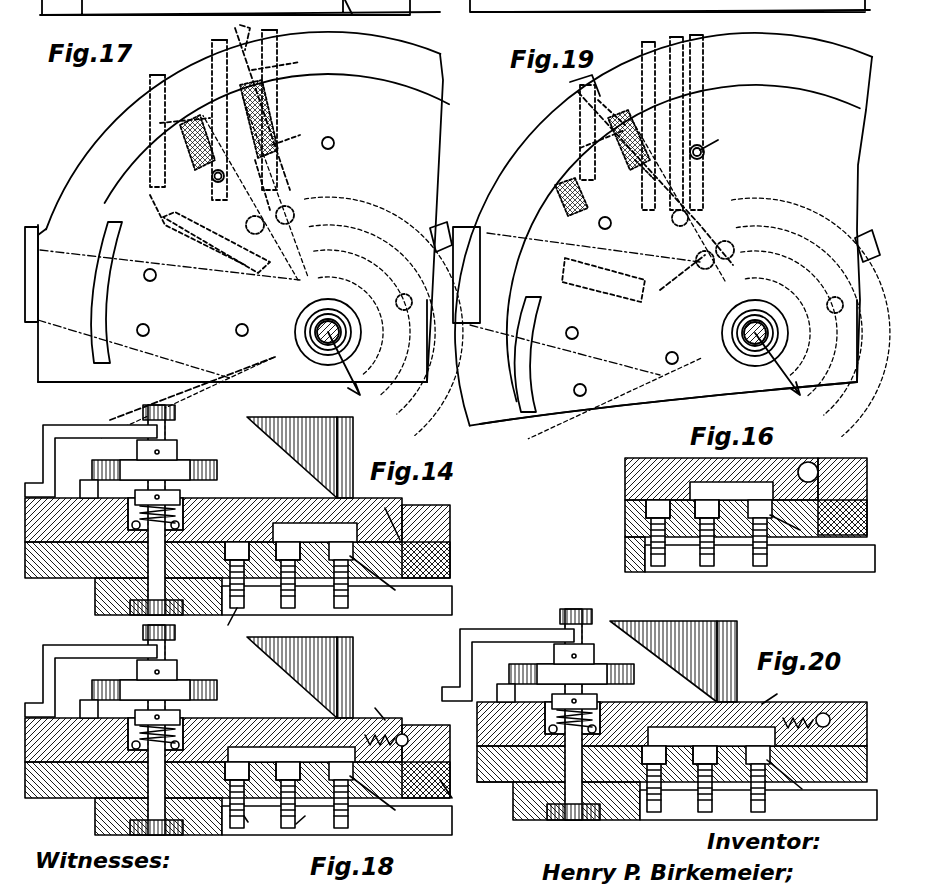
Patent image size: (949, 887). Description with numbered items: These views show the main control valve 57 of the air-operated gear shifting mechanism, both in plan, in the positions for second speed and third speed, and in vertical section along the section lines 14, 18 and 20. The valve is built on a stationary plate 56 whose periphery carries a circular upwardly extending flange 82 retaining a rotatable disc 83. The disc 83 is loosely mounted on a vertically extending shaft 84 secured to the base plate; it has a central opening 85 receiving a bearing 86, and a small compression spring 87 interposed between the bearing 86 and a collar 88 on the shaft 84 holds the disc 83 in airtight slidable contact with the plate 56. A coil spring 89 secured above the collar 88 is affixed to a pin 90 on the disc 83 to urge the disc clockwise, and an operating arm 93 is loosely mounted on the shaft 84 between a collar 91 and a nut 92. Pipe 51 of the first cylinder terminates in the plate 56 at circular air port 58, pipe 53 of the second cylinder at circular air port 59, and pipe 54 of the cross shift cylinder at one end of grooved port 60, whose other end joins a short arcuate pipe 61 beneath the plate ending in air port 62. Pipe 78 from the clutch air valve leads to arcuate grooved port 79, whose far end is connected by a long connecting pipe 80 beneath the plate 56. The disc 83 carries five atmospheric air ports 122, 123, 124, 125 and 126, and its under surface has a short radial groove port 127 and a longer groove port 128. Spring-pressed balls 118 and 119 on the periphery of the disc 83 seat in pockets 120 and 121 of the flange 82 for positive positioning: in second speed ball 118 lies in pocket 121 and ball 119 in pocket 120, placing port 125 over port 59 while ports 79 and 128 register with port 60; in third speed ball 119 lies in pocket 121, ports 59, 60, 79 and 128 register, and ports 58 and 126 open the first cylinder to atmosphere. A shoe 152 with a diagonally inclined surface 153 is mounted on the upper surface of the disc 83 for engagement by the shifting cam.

In FIG. 17, the section line 14— 14 is at (350, 15).
In FIG. 17, the section line 18— 18 is at (295, 204).
In FIG. 19, the section line 20— 20 is at (582, 76).
In FIG. 17, the pipe 51 is at (278, 32).
In FIG. 19, the pipe 51 is at (710, 62).
In FIG. 14, the pipe 51 is at (349, 598).
In FIG. 18, the pipe 51 is at (355, 795).
In FIG. 17, the pipe 53 is at (220, 40).
In FIG. 19, the pipe 53 is at (649, 42).
In FIG. 16, the pipe 53 is at (767, 554).
In FIG. 20, the pipe 53 is at (772, 779).
In FIG. 17, the pipe 54 is at (150, 90).
In FIG. 19, the pipe 54 is at (575, 108).
In FIG. 14, the pipe 54 is at (244, 592).
In FIG. 16, the pipe 54 is at (665, 550).
In FIG. 18, the pipe 54 is at (237, 812).
In FIG. 20, the pipe 54 is at (665, 779).
In FIG. 17, the stationary plate 56 is at (40, 225).
In FIG. 19, the stationary plate 56 is at (473, 226).
In FIG. 14, the stationary plate 56 is at (465, 586).
In FIG. 16, the stationary plate 56 is at (818, 575).
In FIG. 18, the stationary plate 56 is at (346, 831).
In FIG. 20, the stationary plate 56 is at (744, 813).
In FIG. 17, the main control valve 57 is at (105, 140).
In FIG. 19, the main control valve 57 is at (524, 134).
In FIG. 14, the main control valve 57 is at (450, 546).
In FIG. 16, the main control valve 57 is at (858, 540).
In FIG. 18, the main control valve 57 is at (258, 800).
In FIG. 20, the main control valve 57 is at (669, 791).
In FIG. 17, the circular air port 58 is at (297, 131).
In FIG. 19, the circular air port 58 is at (726, 137).
In FIG. 14, the circular air port 58 is at (387, 584).
In FIG. 18, the circular air port 58 is at (385, 802).
In FIG. 17, the circular air port 59 is at (212, 177).
In FIG. 19, the circular air port 59 is at (632, 180).
In FIG. 16, the circular air port 59 is at (804, 539).
In FIG. 20, the circular air port 59 is at (802, 781).
In FIG. 17, the grooved port 60 is at (313, 332).
In FIG. 19, the grooved port 60 is at (739, 333).
In FIG. 14, the grooved port 60 is at (237, 550).
In FIG. 16, the grooved port 60 is at (655, 510).
In FIG. 18, the grooved port 60 is at (240, 736).
In FIG. 20, the grooved port 60 is at (651, 721).
In FIG. 17, the arcuate pipe 61 is at (325, 245).
In FIG. 19, the arcuate pipe 61 is at (805, 245).
In FIG. 18, the arcuate pipe 61 is at (236, 724).
In FIG. 17, the air port 62 is at (404, 312).
In FIG. 19, the air port 62 is at (838, 315).
In FIG. 17, the pipe 78 is at (240, 185).
In FIG. 19, the pipe 78 is at (695, 170).
In FIG. 14, the pipe 78 is at (295, 598).
In FIG. 16, the pipe 78 is at (714, 552).
In FIG. 18, the pipe 78 is at (288, 814).
In FIG. 20, the pipe 78 is at (716, 779).
In FIG. 17, the arcuate grooved port 79 is at (285, 225).
In FIG. 19, the arcuate grooved port 79 is at (700, 225).
In FIG. 14, the arcuate grooved port 79 is at (288, 552).
In FIG. 16, the arcuate grooved port 79 is at (705, 512).
In FIG. 18, the arcuate grooved port 79 is at (285, 735).
In FIG. 20, the arcuate grooved port 79 is at (696, 720).
In FIG. 17, the connecting pipe 80 is at (440, 225).
In FIG. 19, the connecting pipe 80 is at (868, 235).
In FIG. 14, the connecting pipe 80 is at (246, 619).
In FIG. 18, the connecting pipe 80 is at (282, 717).
In FIG. 17, the flange 82 is at (232, 370).
In FIG. 19, the flange 82 is at (668, 403).
In FIG. 14, the flange 82 is at (452, 507).
In FIG. 16, the flange 82 is at (818, 470).
In FIG. 18, the flange 82 is at (228, 721).
In FIG. 20, the flange 82 is at (672, 711).
In FIG. 17, the disc 83 is at (290, 348).
In FIG. 19, the disc 83 is at (840, 365).
In FIG. 14, the disc 83 is at (381, 509).
In FIG. 16, the disc 83 is at (800, 470).
In FIG. 18, the disc 83 is at (375, 706).
In FIG. 20, the disc 83 is at (776, 690).
In FIG. 17, the shaft 84 is at (335, 338).
In FIG. 19, the shaft 84 is at (760, 322).
In FIG. 14, the shaft 84 is at (152, 582).
In FIG. 18, the shaft 84 is at (122, 730).
In FIG. 20, the shaft 84 is at (561, 724).
In FIG. 17, the central opening 85 is at (316, 332).
In FIG. 19, the central opening 85 is at (745, 345).
In FIG. 14, the central opening 85 is at (183, 498).
In FIG. 18, the central opening 85 is at (174, 723).
In FIG. 20, the central opening 85 is at (589, 707).
In FIG. 17, the bearing 86 is at (318, 344).
In FIG. 19, the bearing 86 is at (772, 338).
In FIG. 14, the bearing 86 is at (150, 580).
In FIG. 18, the bearing 86 is at (128, 815).
In FIG. 20, the bearing 86 is at (561, 801).
In FIG. 14, the compression spring 87 is at (140, 505).
In FIG. 18, the compression spring 87 is at (131, 700).
In FIG. 20, the compression spring 87 is at (543, 684).
In FIG. 17, the collar 88 is at (345, 318).
In FIG. 19, the collar 88 is at (775, 325).
In FIG. 14, the collar 88 is at (157, 490).
In FIG. 18, the collar 88 is at (146, 691).
In FIG. 20, the collar 88 is at (558, 675).
In FIG. 14, the coil spring 89 is at (190, 462).
In FIG. 18, the coil spring 89 is at (157, 675).
In FIG. 20, the coil spring 89 is at (571, 661).
In FIG. 14, the pin 90 is at (82, 488).
In FIG. 18, the pin 90 is at (79, 702).
In FIG. 20, the pin 90 is at (496, 690).
In FIG. 14, the collar 91 is at (178, 445).
In FIG. 18, the collar 91 is at (170, 654).
In FIG. 20, the collar 91 is at (585, 626).
In FIG. 14, the nut 92 is at (165, 408).
In FIG. 18, the nut 92 is at (141, 623).
In FIG. 20, the nut 92 is at (556, 606).
In FIG. 14, the operating arm 93 is at (70, 425).
In FIG. 18, the operating arm 93 is at (91, 666).
In FIG. 20, the operating arm 93 is at (498, 665).
In FIG. 17, the spring-pressed ball 118 is at (182, 150).
In FIG. 19, the spring-pressed ball 118 is at (552, 200).
In FIG. 17, the spring-pressed ball 119 is at (300, 64).
In FIG. 19, the spring-pressed ball 119 is at (585, 141).
In FIG. 18, the spring-pressed ball 119 is at (462, 797).
In FIG. 20, the spring-pressed ball 119 is at (665, 793).
In FIG. 17, the pocket 120 is at (215, 98).
In FIG. 19, the pocket 120 is at (712, 100).
In FIG. 14, the pocket 120 is at (412, 520).
In FIG. 18, the pocket 120 is at (435, 746).
In FIG. 17, the pocket 121 is at (165, 127).
In FIG. 19, the pocket 121 is at (612, 102).
In FIG. 16, the pocket 121 is at (788, 460).
In FIG. 18, the pocket 121 is at (388, 733).
In FIG. 20, the pocket 121 is at (812, 702).
In FIG. 17, the air port 122 is at (236, 334).
In FIG. 19, the air port 122 is at (666, 360).
In FIG. 17, the air port 123 is at (148, 326).
In FIG. 19, the air port 123 is at (578, 396).
In FIG. 17, the air port 124 is at (157, 277).
In FIG. 19, the air port 124 is at (578, 333).
In FIG. 17, the air port 125 is at (168, 208).
In FIG. 19, the air port 125 is at (598, 226).
In FIG. 17, the air port 126 is at (335, 143).
In FIG. 19, the air port 126 is at (705, 152).
In FIG. 17, the groove port 127 is at (160, 218).
In FIG. 19, the groove port 127 is at (562, 270).
In FIG. 14, the groove port 127 is at (315, 532).
In FIG. 16, the groove port 127 is at (731, 491).
In FIG. 17, the groove port 128 is at (300, 175).
In FIG. 19, the groove port 128 is at (682, 279).
In FIG. 18, the groove port 128 is at (291, 755).
In FIG. 20, the groove port 128 is at (711, 736).
In FIG. 17, the shoe 152 is at (95, 298).
In FIG. 19, the shoe 152 is at (520, 370).
In FIG. 14, the shoe 152 is at (360, 422).
In FIG. 18, the shoe 152 is at (370, 668).
In FIG. 20, the shoe 152 is at (731, 644).
In FIG. 14, the diagonally inclined surface 153 is at (285, 455).
In FIG. 18, the diagonally inclined surface 153 is at (284, 677).
In FIG. 20, the diagonally inclined surface 153 is at (663, 644).